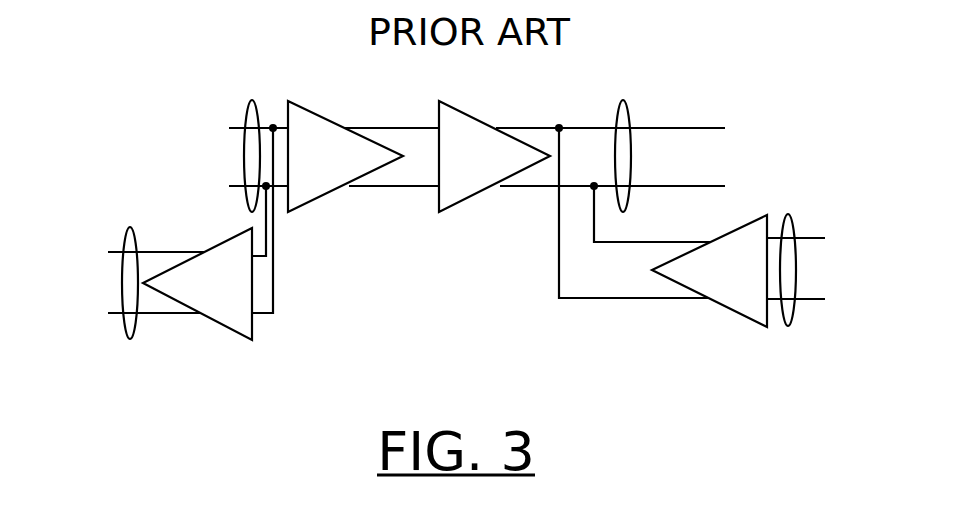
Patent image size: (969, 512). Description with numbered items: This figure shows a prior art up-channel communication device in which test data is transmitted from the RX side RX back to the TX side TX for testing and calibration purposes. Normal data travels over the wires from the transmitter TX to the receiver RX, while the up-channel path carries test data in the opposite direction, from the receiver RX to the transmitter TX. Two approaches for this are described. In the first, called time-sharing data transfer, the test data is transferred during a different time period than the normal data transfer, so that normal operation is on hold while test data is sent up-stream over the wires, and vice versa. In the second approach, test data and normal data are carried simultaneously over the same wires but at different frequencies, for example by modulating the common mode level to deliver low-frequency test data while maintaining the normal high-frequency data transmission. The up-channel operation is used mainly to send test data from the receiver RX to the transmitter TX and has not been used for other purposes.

The TX side TX is at (363, 156).
The RX side RX is at (516, 156).